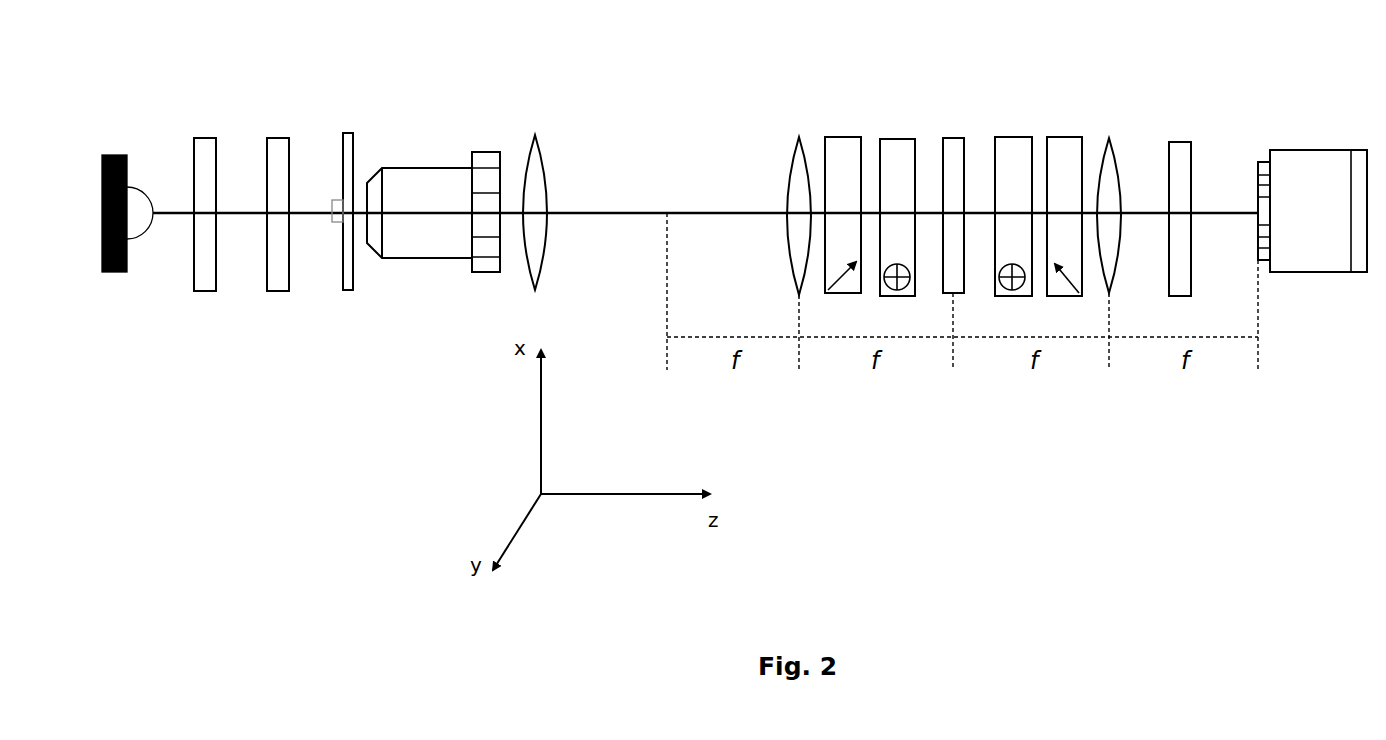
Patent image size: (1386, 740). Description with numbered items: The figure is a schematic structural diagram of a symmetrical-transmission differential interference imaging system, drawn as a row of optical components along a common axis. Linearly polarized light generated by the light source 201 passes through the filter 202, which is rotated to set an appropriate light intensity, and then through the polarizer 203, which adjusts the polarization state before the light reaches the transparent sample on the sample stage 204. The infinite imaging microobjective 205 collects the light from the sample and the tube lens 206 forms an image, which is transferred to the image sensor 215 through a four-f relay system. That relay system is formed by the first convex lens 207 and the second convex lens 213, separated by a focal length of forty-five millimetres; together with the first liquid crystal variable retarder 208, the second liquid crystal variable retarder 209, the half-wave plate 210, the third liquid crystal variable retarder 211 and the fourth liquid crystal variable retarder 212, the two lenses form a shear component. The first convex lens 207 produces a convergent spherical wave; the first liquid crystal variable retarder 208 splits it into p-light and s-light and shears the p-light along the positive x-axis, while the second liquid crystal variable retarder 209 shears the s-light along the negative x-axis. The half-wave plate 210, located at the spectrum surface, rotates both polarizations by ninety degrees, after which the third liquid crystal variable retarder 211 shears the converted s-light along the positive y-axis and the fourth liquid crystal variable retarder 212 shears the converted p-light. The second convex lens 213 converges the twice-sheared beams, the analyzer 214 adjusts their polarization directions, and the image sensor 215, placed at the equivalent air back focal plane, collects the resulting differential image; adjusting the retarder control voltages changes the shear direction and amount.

The light source 201 is at (113, 155).
The filter 202 is at (203, 138).
The polarizer 203 is at (277, 138).
The sample stage 204 is at (347, 133).
The infinite imaging microobjective 205 is at (430, 167).
The tube lens 206 is at (535, 135).
The first convex lens 207 is at (799, 137).
The first liquid crystal variable retarder 208 is at (840, 137).
The second liquid crystal variable retarder 209 is at (898, 139).
The half-wave plate 210 is at (950, 138).
The third liquid crystal variable retarder 211 is at (1012, 137).
The fourth liquid crystal variable retarder 212 is at (1065, 137).
The second convex lens 213 is at (1109, 138).
The analyzer 214 is at (1178, 142).
The image sensor 215 is at (1318, 150).